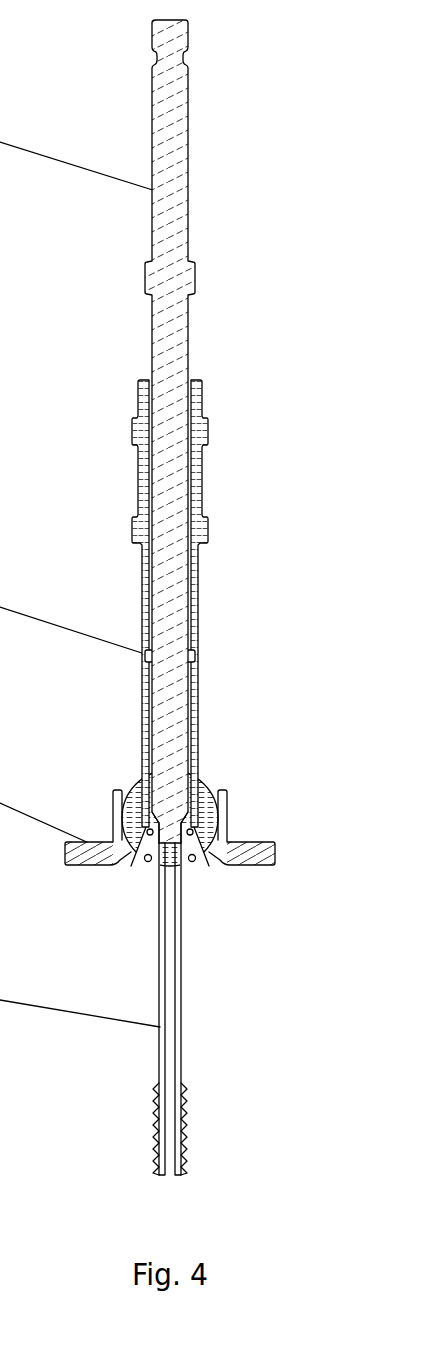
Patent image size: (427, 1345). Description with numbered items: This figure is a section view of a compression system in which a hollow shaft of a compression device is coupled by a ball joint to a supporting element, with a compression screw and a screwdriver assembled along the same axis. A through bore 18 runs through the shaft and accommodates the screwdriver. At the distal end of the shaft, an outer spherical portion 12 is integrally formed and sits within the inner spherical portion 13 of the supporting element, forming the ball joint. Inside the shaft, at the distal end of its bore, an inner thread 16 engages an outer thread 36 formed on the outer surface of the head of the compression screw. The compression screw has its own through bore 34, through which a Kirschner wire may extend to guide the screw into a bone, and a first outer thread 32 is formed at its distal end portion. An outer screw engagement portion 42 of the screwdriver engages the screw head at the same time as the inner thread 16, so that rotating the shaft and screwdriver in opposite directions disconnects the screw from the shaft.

The outer spherical portion 12 is at (137, 800).
The inner spherical portion 13 is at (118, 833).
The inner thread 16 is at (194, 861).
The through bore 18 is at (148, 368).
The first outer thread 32 is at (155, 1127).
The through bore 34 is at (172, 988).
The outer thread 36 is at (151, 861).
The outer screw engagement portion 42 is at (183, 834).